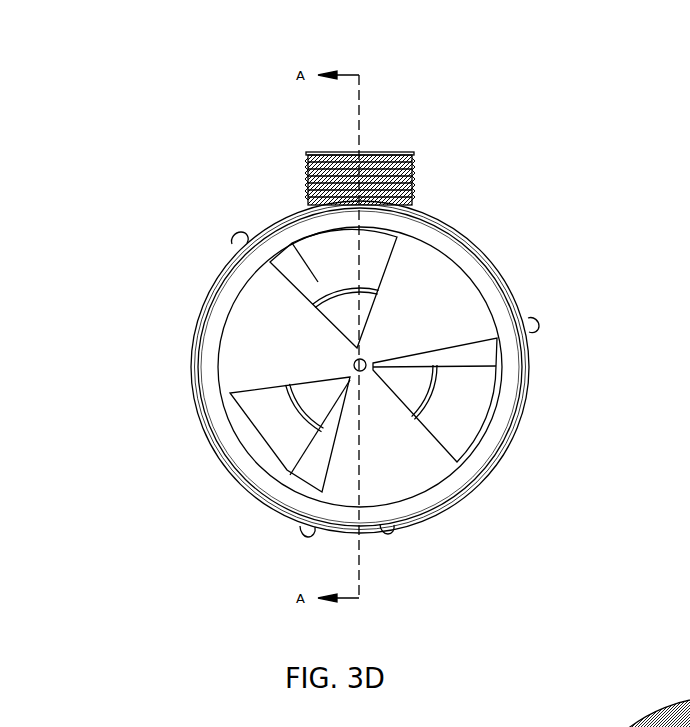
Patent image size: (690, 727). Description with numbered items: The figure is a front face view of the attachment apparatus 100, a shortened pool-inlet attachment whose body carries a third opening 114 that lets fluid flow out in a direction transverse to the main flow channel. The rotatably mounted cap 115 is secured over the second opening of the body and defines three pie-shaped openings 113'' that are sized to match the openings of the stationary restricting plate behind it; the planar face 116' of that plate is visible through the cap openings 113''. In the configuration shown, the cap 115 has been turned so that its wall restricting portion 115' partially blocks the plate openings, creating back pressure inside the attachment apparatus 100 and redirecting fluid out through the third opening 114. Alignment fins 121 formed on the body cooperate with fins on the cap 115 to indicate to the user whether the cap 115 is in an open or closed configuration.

The attachment apparatus 100 is at (372, 295).
The third opening 114 is at (395, 147).
The cap 115 is at (420, 309).
The alignment fins 121 is at (154, 296).
The wall restricting portion 115' is at (296, 367).
The openings 113'' is at (526, 400).
The planar face 116' is at (241, 467).